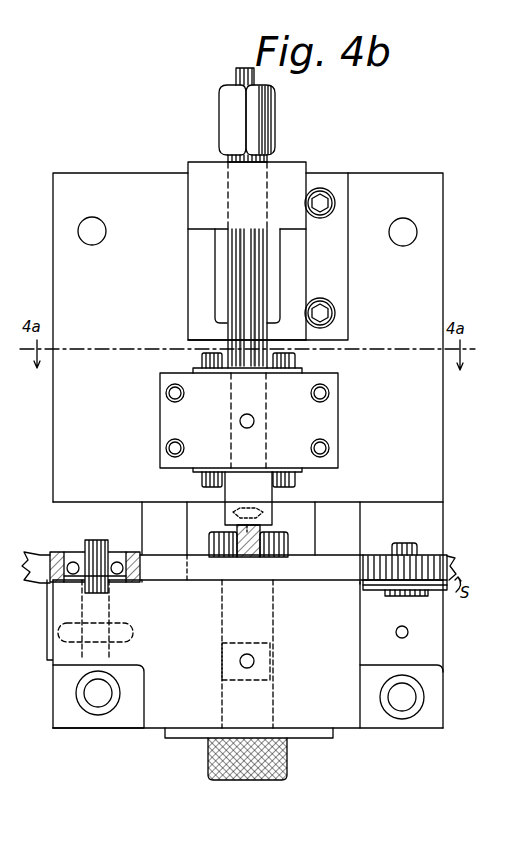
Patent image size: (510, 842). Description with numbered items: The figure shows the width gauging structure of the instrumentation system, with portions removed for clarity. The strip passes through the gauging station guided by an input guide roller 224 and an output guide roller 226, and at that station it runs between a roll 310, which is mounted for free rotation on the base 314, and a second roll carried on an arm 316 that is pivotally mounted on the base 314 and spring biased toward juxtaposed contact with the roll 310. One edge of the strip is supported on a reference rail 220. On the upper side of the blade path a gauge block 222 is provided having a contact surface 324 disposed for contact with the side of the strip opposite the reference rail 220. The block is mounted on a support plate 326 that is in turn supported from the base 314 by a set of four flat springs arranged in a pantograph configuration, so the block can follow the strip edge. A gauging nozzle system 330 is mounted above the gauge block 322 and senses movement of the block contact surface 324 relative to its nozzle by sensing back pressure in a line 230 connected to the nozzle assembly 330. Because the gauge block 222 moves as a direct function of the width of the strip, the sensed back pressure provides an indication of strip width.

The line 230 is at (246, 68).
The gauging nozzle system 330 is at (260, 268).
The gauge block 322 is at (251, 507).
The support plate 326 is at (267, 500).
The roll 310 is at (214, 537).
The gauge block 222 is at (272, 536).
The contact surface 324 is at (245, 558).
The reference rail 220 is at (251, 579).
The output guide roller 226 is at (67, 562).
The input guide roller 224 is at (440, 562).
The arm 316 is at (327, 678).
The base 314 is at (408, 731).